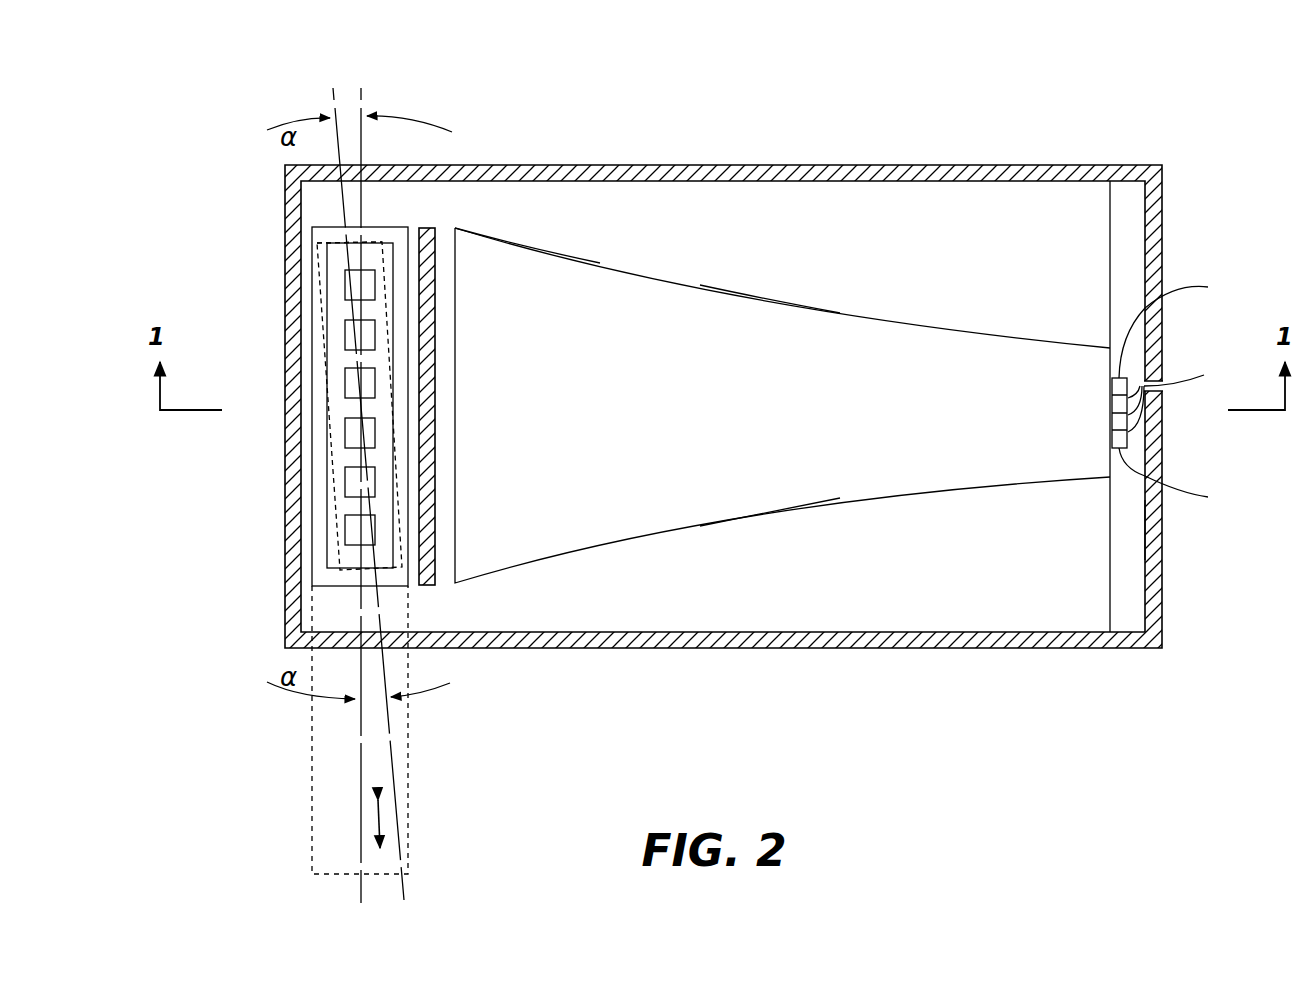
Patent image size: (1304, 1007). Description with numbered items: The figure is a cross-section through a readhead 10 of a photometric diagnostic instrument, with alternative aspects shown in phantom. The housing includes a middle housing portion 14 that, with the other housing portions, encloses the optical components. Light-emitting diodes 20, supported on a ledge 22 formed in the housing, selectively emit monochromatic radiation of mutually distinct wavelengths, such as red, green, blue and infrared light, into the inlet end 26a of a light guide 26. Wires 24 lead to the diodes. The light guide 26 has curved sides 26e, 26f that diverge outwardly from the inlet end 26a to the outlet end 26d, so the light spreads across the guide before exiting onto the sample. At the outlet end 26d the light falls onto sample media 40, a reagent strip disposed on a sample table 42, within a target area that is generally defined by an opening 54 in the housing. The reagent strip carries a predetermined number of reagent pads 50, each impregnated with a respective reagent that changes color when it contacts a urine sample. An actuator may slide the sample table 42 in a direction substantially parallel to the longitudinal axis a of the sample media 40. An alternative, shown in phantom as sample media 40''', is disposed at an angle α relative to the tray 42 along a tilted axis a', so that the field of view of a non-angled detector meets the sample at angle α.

The readhead 10 is at (250, 149).
The middle housing portion 14 is at (1037, 161).
The light-emitting diodes 20 is at (1178, 393).
The ledge 22 is at (1135, 523).
The electrical wires 24 is at (1180, 378).
The light guide 26 is at (795, 430).
The inlet end 26a is at (1080, 462).
The outlet end 26d is at (480, 262).
The curved side 26e is at (775, 300).
The curved side 26f is at (795, 515).
The sample media 40 is at (308, 406).
The sample media 40''' is at (288, 271).
The sample table 42 is at (320, 460).
The reagent pads 50 is at (355, 527).
The opening 54 is at (318, 230).
The longitudinal axis a is at (424, 495).
The tilted axis a' is at (414, 494).